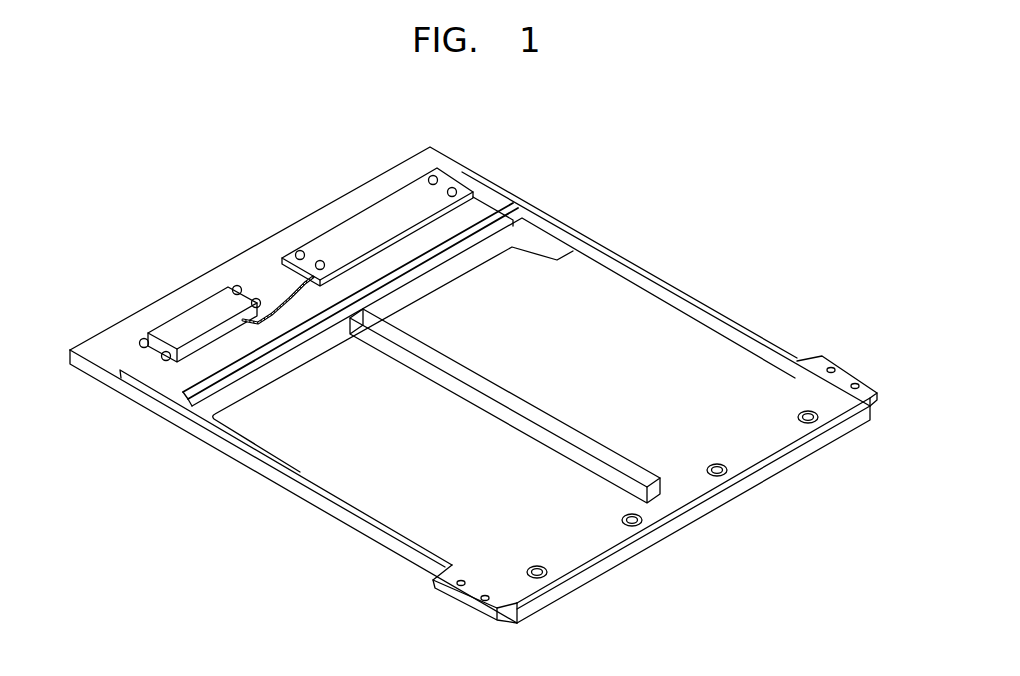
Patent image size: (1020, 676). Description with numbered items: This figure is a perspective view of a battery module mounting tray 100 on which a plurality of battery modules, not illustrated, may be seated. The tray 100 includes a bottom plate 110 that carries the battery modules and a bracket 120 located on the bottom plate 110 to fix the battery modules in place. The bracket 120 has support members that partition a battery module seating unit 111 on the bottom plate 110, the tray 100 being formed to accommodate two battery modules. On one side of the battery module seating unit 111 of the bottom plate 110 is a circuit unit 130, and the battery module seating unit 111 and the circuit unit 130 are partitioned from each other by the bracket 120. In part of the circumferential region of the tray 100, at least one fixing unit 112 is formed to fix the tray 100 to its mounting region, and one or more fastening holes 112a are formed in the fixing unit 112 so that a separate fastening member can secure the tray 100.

The battery module mounting tray 100 is at (633, 215).
The bottom plate 110 is at (640, 310).
The battery module seating unit 111 is at (537, 330).
The fixing unit 112 is at (843, 380).
The fastening hole 112a is at (480, 598).
The bracket 120 is at (450, 252).
The circuit unit 130 is at (452, 166).